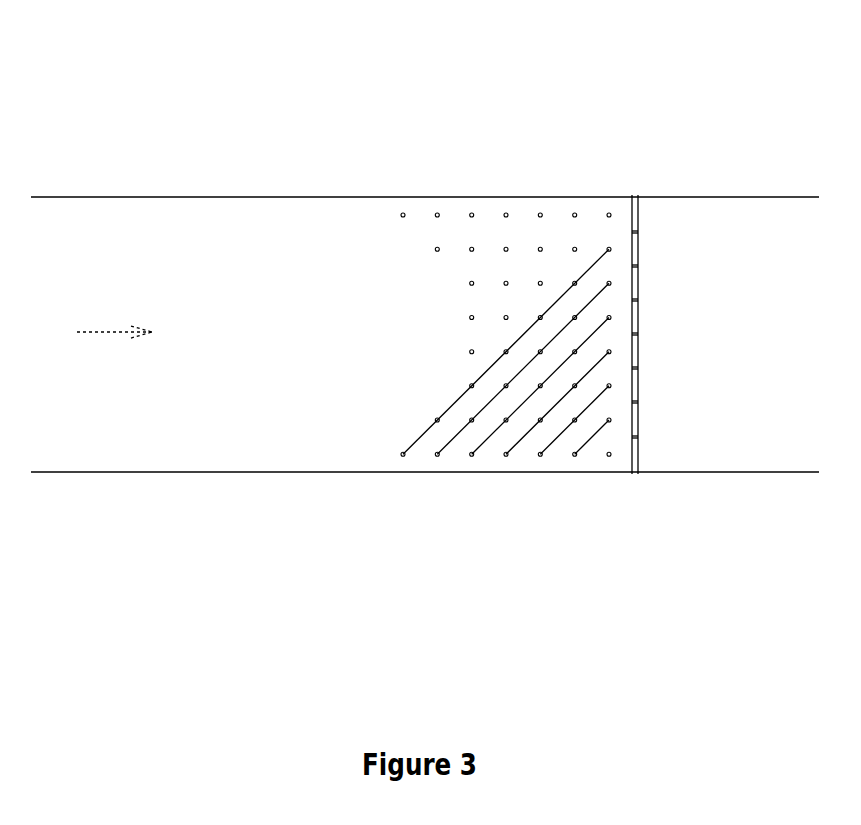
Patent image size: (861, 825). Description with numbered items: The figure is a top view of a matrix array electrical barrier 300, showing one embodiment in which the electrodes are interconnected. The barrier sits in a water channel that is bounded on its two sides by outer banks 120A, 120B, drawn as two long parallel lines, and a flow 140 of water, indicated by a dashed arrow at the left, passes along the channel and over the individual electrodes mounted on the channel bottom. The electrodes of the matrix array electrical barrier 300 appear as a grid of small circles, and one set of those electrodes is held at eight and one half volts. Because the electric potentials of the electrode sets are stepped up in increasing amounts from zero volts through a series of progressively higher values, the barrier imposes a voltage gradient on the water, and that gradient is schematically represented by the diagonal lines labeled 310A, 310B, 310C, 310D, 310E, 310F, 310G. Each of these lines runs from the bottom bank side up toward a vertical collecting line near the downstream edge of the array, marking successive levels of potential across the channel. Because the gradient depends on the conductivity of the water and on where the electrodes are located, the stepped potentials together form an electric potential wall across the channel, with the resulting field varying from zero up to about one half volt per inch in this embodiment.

The outer bank 120A is at (315, 197).
The outer bank 120B is at (285, 472).
The flow 140 is at (123, 330).
The matrix array electrical barrier 300 is at (519, 142).
The voltage gradient 310A is at (612, 249).
The voltage gradient 310B is at (612, 283).
The voltage gradient 310C is at (612, 317).
The voltage gradient 310D is at (612, 351).
The voltage gradient 310E is at (612, 385).
The voltage gradient 310F is at (612, 420).
The voltage gradient 310G is at (612, 454).